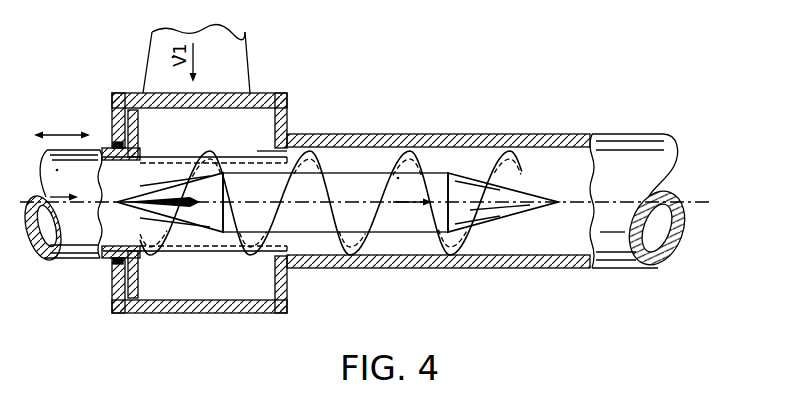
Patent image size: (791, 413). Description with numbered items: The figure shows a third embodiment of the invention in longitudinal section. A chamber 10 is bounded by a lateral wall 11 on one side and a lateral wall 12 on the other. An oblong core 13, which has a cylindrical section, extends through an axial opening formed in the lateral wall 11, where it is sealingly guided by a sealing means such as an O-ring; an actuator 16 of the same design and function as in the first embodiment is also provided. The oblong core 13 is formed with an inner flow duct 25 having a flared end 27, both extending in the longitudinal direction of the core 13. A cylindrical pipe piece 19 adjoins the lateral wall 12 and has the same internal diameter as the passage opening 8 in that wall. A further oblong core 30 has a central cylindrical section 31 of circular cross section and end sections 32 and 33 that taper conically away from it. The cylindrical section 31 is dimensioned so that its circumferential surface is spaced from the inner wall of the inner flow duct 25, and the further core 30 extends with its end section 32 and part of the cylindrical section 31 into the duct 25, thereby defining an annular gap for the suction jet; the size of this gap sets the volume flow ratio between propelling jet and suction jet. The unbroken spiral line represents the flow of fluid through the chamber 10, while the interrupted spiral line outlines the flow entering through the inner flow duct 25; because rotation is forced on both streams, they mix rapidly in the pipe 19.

The passage opening 8 is at (278, 158).
The chamber 10 is at (232, 124).
The lateral wall 11 is at (113, 293).
The lateral wall 12 is at (281, 285).
The oblong core 13 is at (192, 256).
The actuator 16 is at (140, 298).
The cylindrical pipe piece 19 is at (473, 272).
The inner flow duct 25 is at (59, 230).
The flared end 27 is at (273, 156).
The further oblong core 30 is at (353, 163).
The central cylindrical section 31 is at (432, 187).
The end section 32 is at (172, 210).
The end section 33 is at (502, 213).